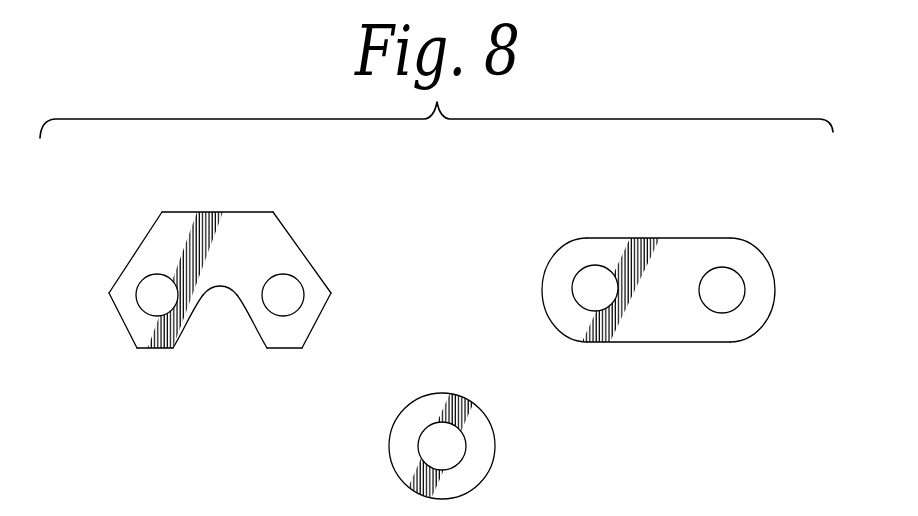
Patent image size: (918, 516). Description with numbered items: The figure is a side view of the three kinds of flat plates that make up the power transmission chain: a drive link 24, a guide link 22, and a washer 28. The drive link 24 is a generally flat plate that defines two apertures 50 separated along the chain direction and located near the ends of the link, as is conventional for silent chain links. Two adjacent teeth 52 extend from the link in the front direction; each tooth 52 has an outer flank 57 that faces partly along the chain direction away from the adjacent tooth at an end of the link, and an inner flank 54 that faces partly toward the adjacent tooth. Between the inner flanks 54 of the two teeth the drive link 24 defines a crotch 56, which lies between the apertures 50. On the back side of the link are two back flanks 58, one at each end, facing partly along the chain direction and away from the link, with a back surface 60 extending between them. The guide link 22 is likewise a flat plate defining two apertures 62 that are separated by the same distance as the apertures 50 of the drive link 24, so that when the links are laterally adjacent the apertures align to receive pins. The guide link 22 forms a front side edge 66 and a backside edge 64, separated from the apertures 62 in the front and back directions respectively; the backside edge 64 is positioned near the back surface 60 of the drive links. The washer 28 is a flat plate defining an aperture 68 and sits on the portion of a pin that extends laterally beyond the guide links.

The guide link 22 is at (705, 200).
The drive link 24 is at (231, 188).
The washer 28 is at (497, 400).
The aperture 50 is at (142, 311).
The tooth 52 is at (283, 348).
The inner flank 54 is at (187, 332).
The crotch 56 is at (221, 288).
The outer flank 57 is at (121, 313).
The back flank 58 is at (140, 245).
The back surface 60 is at (247, 210).
The aperture 62 is at (577, 298).
The backside edge 64 is at (612, 238).
The front side edge 66 is at (672, 343).
The aperture 68 is at (467, 447).